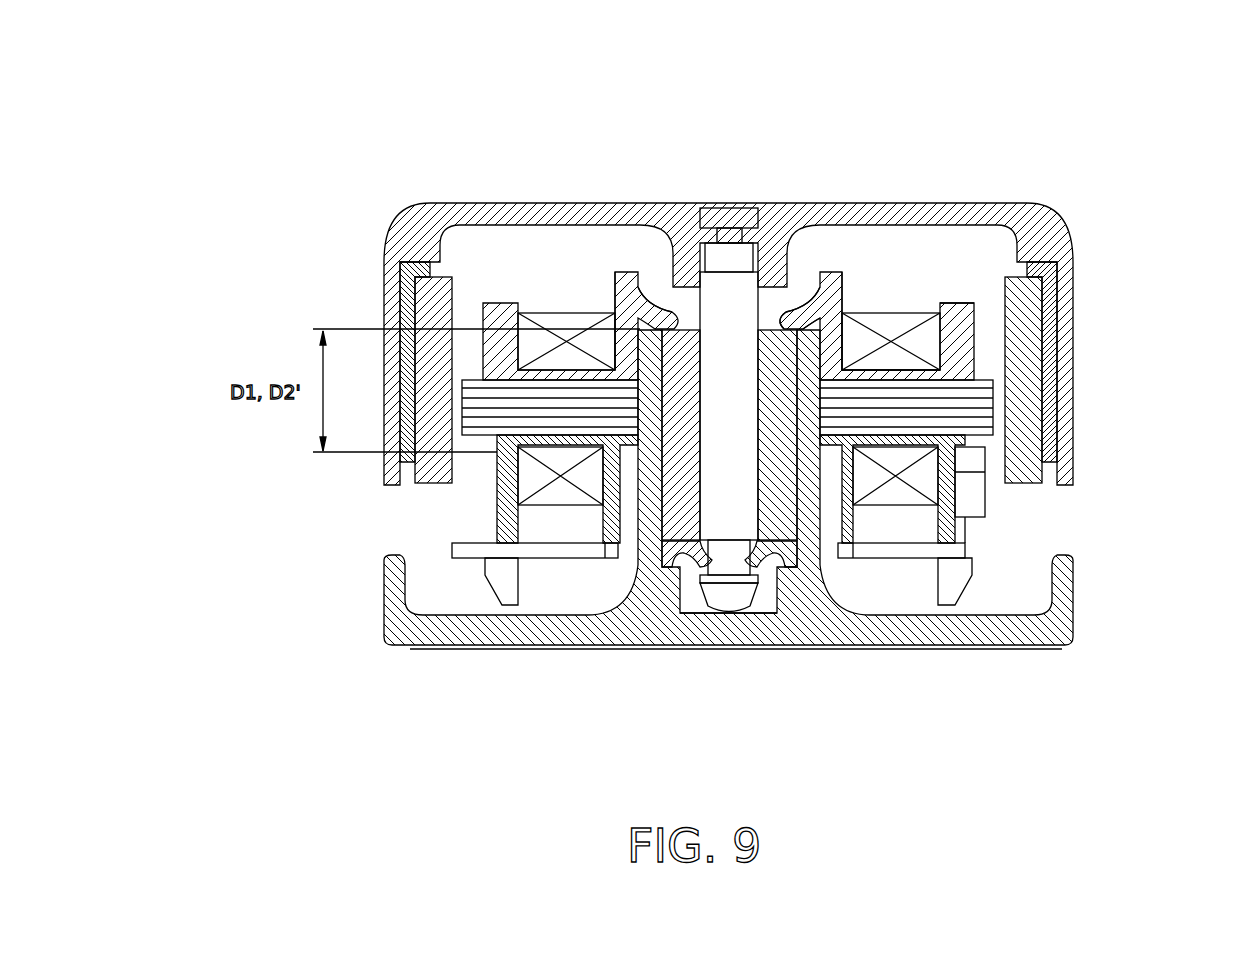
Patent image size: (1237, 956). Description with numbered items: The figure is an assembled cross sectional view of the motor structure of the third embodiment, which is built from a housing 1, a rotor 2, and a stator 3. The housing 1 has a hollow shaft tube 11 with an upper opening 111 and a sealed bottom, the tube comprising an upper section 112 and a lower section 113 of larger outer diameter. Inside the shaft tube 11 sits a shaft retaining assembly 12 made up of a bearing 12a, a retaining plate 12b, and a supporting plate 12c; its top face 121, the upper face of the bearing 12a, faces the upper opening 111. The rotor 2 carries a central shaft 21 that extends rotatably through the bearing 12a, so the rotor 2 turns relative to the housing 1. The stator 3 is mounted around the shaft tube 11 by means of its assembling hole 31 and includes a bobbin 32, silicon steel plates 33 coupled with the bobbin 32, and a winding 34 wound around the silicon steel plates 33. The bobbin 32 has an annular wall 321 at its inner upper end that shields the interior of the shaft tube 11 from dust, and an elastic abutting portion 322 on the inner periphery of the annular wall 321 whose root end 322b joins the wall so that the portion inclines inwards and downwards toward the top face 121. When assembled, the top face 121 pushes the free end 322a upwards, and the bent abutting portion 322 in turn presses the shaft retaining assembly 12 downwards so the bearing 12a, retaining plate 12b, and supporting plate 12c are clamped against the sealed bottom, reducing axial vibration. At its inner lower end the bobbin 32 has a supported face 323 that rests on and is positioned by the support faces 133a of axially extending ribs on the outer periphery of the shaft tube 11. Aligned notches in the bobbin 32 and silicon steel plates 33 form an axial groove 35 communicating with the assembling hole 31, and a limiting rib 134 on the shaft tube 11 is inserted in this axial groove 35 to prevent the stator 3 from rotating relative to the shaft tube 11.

The housing 1 is at (1005, 657).
The rotor 2 is at (370, 228).
The stator 3 is at (766, 271).
The shaft tube 11 is at (824, 438).
The upper opening 111 is at (800, 327).
The upper section 112 is at (827, 510).
The lower section 113 is at (920, 530).
The shaft retaining assembly 12 is at (757, 558).
The bearing 12a is at (790, 515).
The retaining plate 12b is at (767, 575).
The supporting plate 12c is at (729, 633).
The top face 121 is at (712, 288).
The shaft 21 is at (702, 228).
The assembling hole 31 is at (652, 300).
The bobbin 32 is at (975, 352).
The silicon steel plates 33 is at (993, 418).
The winding 34 is at (918, 315).
The axial groove 35 is at (886, 312).
The support face 133a is at (569, 257).
The limiting rib 134 is at (918, 214).
The annular wall 321 is at (870, 305).
The abutting portion 322 is at (796, 209).
The free end 322a is at (783, 314).
The root end 322b is at (803, 318).
The supported face 323 is at (620, 432).